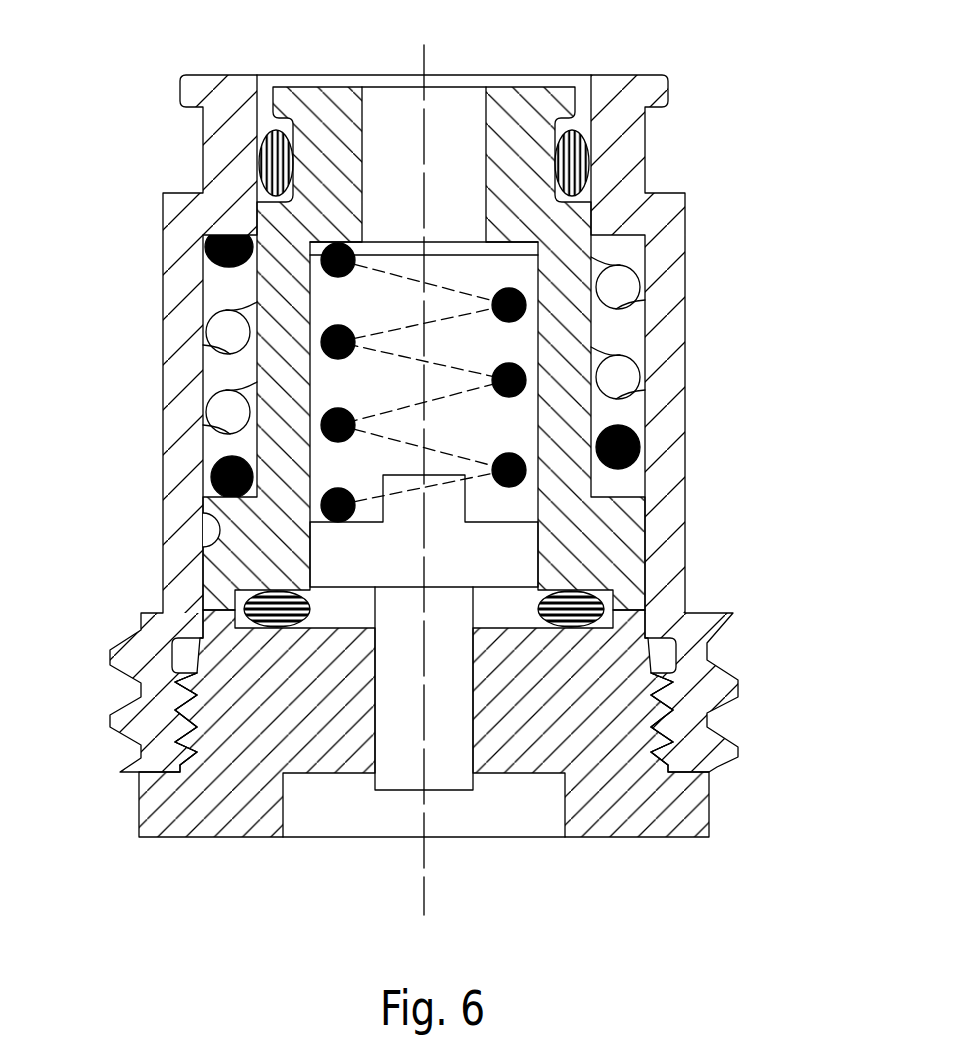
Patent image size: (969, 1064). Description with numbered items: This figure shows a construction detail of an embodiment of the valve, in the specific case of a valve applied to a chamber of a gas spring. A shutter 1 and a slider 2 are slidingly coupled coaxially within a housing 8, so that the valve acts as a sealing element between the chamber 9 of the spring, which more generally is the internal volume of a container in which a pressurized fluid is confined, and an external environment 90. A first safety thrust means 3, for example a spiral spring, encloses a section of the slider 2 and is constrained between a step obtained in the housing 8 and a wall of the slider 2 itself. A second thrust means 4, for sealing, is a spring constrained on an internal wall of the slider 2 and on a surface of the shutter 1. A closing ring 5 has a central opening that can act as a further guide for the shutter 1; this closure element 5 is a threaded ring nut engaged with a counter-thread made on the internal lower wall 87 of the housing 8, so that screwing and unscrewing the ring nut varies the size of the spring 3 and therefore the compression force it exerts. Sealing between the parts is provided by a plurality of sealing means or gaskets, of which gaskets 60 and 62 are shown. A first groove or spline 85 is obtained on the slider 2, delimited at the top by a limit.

The shutter 1 is at (522, 556).
The slider 2 is at (568, 352).
The first safety thrust means 3 is at (222, 425).
The second thrust means 4 is at (522, 303).
The closing ring 5 is at (240, 686).
The housing 8 is at (176, 290).
The chamber 9 is at (362, 44).
The sealing means or gasket 60 is at (580, 610).
The sealing means or gasket 62 is at (577, 164).
The first groove or spline 85 is at (205, 532).
The internal lower wall 87 is at (186, 740).
The external environment 90 is at (531, 900).